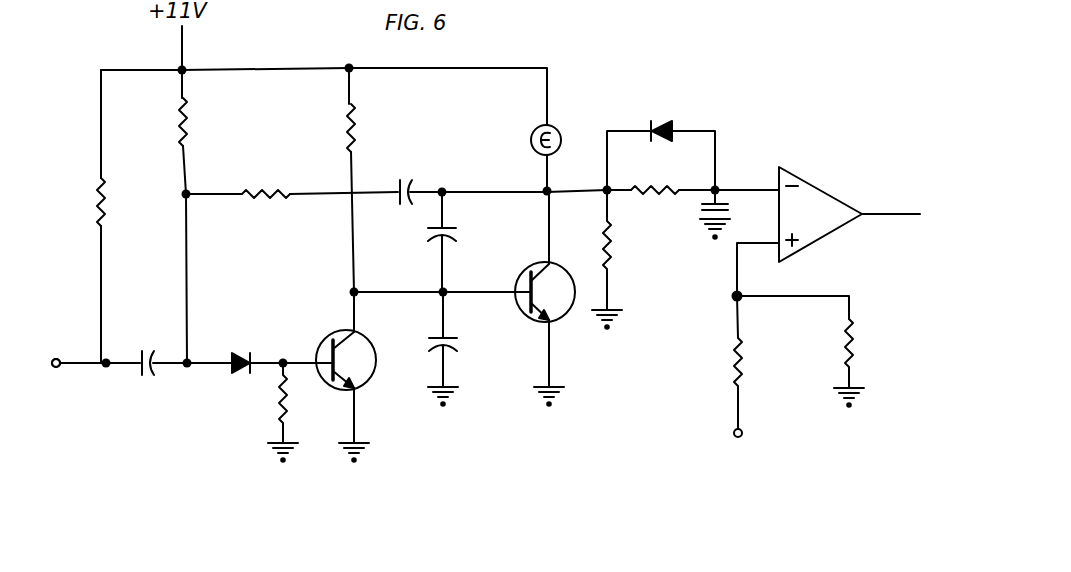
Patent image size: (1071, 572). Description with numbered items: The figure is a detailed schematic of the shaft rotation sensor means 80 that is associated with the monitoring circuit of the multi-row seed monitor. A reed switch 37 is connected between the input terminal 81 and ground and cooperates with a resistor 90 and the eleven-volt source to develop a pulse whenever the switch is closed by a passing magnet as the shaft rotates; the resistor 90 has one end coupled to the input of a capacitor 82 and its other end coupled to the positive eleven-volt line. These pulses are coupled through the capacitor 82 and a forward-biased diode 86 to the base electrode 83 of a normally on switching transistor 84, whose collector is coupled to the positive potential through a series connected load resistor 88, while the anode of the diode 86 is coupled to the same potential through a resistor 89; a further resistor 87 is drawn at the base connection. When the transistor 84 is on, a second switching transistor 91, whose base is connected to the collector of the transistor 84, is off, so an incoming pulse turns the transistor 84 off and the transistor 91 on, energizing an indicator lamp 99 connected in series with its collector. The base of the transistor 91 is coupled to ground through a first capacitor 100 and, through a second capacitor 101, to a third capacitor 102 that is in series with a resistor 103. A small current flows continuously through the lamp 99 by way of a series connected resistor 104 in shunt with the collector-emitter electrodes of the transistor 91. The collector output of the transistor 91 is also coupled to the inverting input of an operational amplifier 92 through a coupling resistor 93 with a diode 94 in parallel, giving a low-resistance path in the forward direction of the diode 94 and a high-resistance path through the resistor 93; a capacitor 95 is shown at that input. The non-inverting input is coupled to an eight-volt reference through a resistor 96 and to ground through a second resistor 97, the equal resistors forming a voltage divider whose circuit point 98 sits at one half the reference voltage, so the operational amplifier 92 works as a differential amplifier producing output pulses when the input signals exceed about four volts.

The reed switch 37 is at (42, 328).
The shaft rotation sensor means 80 is at (606, 100).
The input terminal 81 is at (58, 368).
The capacitor 82 is at (146, 378).
The base electrode 83 is at (306, 356).
The switching transistor 84 is at (374, 345).
The diode 86 is at (240, 352).
The resistor 87 is at (280, 398).
The load resistor 88 is at (358, 128).
The resistor 89 is at (194, 124).
The resistor 90 is at (104, 212).
The second switching transistor 91 is at (520, 276).
The operational amplifier 92 is at (810, 174).
The coupling resistor 93 is at (654, 182).
The diode 94 is at (668, 128).
The capacitor 95 is at (729, 208).
The resistor 96 is at (734, 356).
The second resistor 97 is at (846, 346).
The circuit point 98 is at (734, 294).
The indicator lamp 99 is at (531, 138).
The first capacitor 100 is at (460, 348).
The second capacitor 101 is at (455, 228).
The third capacitor 102 is at (414, 188).
The resistor 103 is at (275, 190).
The resistor 104 is at (614, 222).